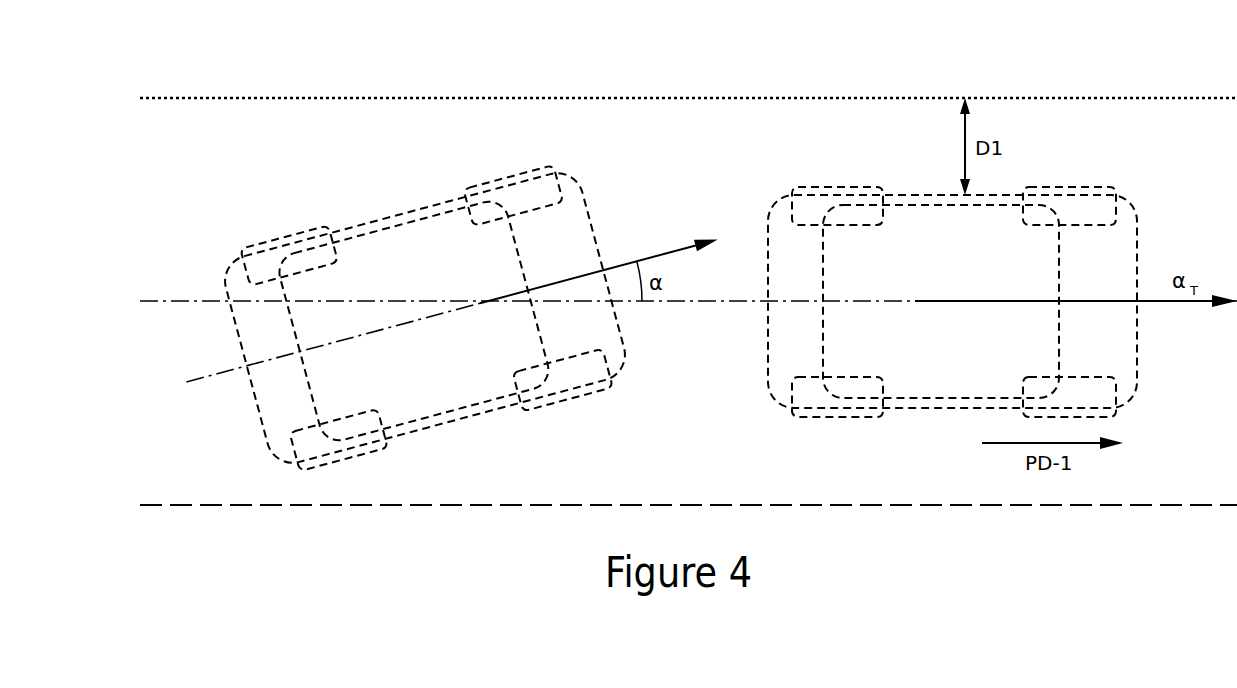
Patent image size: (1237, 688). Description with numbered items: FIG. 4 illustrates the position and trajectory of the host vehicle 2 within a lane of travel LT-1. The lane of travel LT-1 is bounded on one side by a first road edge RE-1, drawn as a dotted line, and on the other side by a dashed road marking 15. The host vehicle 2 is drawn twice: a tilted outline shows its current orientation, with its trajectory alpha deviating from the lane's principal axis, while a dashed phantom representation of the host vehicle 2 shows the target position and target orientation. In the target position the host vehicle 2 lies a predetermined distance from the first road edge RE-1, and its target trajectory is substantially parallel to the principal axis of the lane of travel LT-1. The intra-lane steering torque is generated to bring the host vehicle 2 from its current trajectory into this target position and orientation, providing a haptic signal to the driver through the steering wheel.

The host vehicle 2 is at (388, 242).
The lane marking 15 is at (1180, 505).
The first road edge RE-1 is at (1145, 98).
The lane of travel LT-1 is at (188, 187).